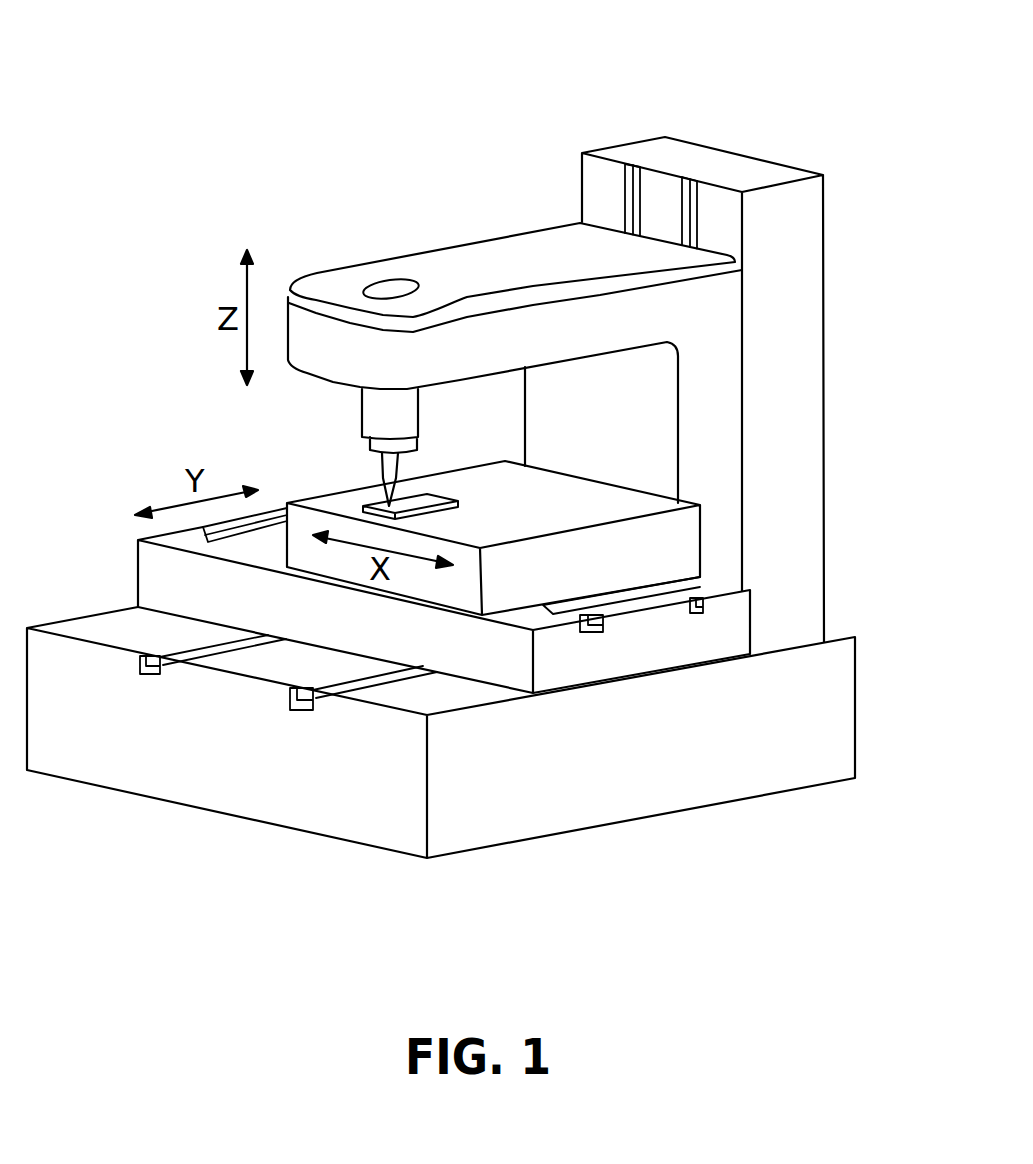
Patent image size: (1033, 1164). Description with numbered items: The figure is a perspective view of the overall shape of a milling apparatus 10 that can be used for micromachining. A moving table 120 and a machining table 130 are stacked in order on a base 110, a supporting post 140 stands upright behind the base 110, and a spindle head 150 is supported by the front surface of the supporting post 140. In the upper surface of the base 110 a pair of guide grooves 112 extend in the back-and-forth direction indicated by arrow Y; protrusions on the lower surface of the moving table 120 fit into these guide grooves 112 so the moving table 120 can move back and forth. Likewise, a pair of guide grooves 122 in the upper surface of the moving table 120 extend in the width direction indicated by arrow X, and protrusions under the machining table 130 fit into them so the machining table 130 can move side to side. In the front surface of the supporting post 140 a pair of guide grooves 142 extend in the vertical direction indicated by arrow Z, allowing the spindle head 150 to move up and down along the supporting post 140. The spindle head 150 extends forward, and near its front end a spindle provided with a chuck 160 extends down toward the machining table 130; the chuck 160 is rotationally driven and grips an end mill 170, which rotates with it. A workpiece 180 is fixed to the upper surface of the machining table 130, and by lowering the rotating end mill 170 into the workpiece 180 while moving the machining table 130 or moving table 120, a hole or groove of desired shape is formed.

The milling apparatus 10 is at (138, 62).
The base 110 is at (395, 822).
The guide grooves 112 is at (290, 697).
The moving table 120 is at (654, 660).
The guide grooves 122 is at (713, 592).
The machining table 130 is at (683, 540).
The supporting post 140 is at (813, 207).
The guide grooves 142 is at (621, 163).
The spindle head 150 is at (462, 260).
The chuck 160 is at (363, 443).
The end mill 170 is at (387, 477).
The workpiece 180 is at (437, 497).